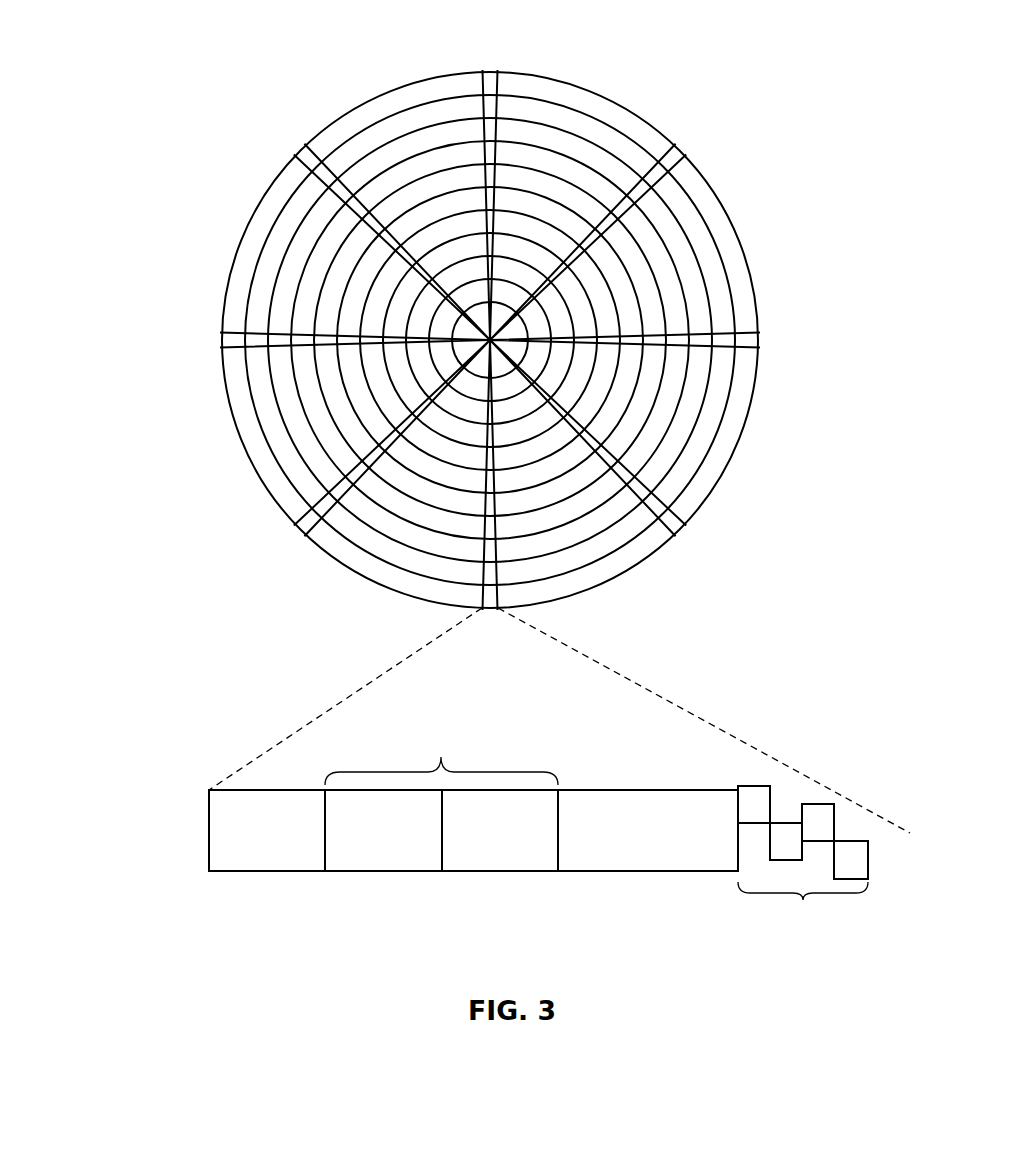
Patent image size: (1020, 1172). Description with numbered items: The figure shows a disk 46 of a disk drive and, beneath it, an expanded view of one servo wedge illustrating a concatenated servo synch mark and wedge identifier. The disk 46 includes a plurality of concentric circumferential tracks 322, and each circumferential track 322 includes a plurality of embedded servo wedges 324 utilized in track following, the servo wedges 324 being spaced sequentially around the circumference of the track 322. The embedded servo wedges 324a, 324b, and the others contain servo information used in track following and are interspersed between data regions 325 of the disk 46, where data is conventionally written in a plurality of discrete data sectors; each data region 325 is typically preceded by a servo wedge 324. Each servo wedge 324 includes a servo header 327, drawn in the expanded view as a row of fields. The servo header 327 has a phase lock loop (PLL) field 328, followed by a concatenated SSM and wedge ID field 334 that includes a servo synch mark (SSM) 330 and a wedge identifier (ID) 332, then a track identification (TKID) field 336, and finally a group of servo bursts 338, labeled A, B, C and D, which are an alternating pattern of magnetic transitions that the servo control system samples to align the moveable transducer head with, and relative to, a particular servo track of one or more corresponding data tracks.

The disk 46 is at (318, 46).
The concentric circumferential tracks 322 is at (262, 238).
The servo wedges 324 is at (491, 76).
The servo wedge 324a is at (305, 155).
The servo wedge 324b is at (226, 338).
The data regions 325 is at (558, 115).
The servo header 327 is at (555, 652).
The phase lock loop (PLL) field 328 is at (245, 872).
The servo synch mark (SSM) 330 is at (410, 872).
The wedge identifier (ID) 332 is at (495, 872).
The concatenated SSM and wedge ID field 334 is at (443, 757).
The track identification (TKID) field 336 is at (632, 872).
The servo bursts 338 is at (745, 778).